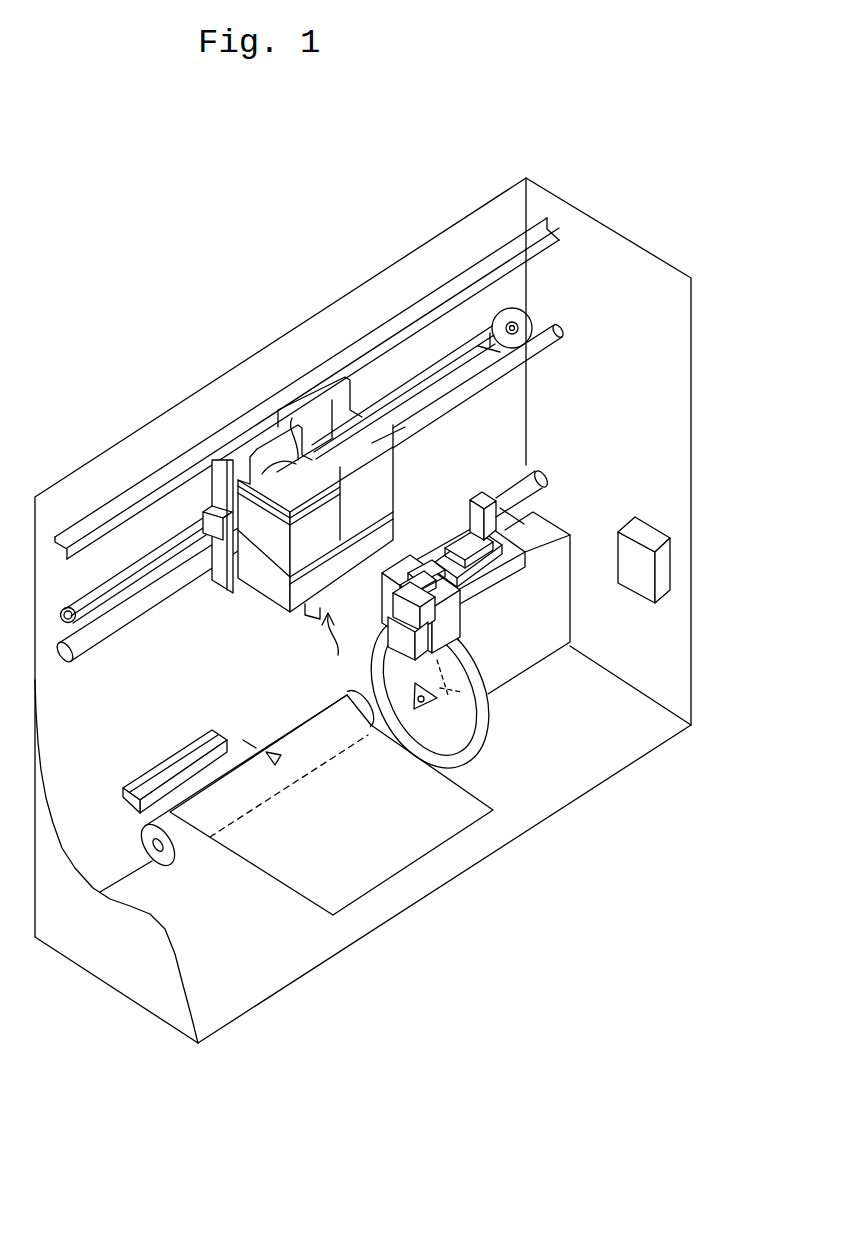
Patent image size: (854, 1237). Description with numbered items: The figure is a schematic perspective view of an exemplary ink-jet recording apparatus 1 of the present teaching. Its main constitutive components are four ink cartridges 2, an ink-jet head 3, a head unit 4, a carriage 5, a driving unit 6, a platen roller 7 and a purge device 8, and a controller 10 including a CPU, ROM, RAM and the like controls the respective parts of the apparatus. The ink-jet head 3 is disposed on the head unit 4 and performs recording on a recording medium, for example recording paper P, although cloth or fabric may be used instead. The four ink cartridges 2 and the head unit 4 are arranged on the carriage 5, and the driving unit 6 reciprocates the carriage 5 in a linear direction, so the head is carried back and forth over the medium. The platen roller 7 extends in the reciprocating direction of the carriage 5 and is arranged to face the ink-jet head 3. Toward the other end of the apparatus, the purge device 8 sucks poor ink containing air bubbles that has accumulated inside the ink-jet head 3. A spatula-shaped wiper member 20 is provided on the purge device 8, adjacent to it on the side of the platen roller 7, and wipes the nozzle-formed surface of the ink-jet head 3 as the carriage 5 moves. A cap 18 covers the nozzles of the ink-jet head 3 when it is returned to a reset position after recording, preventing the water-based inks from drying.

The ink-jet recording apparatus 1 is at (274, 204).
The ink cartridge 2 is at (322, 443).
The ink-jet head 3 is at (348, 585).
The head unit 4 is at (333, 646).
The carriage 5 is at (218, 480).
The driving unit 6 is at (543, 202).
The platen roller 7 is at (187, 837).
The purge device 8 is at (628, 630).
The controller 10 is at (647, 538).
The cap 18 is at (500, 535).
The wiper member 20 is at (410, 617).
The recording paper P is at (323, 890).